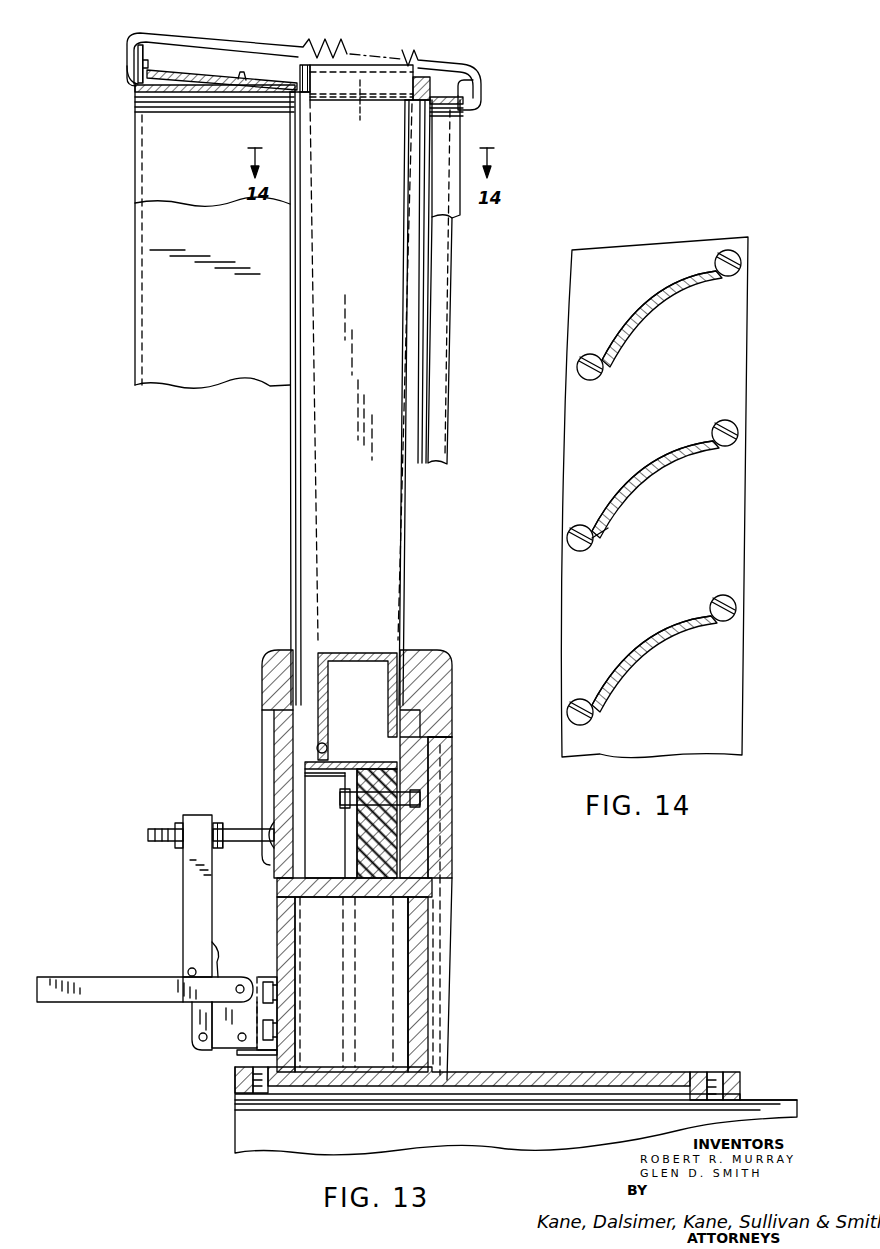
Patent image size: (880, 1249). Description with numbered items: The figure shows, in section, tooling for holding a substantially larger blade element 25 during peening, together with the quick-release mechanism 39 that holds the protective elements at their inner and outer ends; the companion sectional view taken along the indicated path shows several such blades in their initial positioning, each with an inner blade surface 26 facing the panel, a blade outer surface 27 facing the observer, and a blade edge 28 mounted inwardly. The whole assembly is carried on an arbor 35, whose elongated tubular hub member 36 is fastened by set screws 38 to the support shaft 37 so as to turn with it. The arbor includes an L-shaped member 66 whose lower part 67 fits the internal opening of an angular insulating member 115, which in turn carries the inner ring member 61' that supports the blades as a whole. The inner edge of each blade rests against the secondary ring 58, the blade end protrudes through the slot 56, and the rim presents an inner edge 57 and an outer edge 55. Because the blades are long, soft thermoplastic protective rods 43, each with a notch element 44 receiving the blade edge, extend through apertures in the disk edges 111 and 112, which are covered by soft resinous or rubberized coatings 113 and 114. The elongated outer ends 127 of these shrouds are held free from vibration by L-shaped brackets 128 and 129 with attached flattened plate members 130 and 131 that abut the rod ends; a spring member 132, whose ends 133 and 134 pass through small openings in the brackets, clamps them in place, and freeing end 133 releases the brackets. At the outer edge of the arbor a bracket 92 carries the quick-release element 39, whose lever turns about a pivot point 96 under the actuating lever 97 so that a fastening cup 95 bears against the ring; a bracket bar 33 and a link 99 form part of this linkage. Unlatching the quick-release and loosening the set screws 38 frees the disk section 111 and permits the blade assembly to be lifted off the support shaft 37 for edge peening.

In FIG. 13, the blade element 25 is at (390, 356).
In FIG. 14, the blade element 25 is at (713, 489).
In FIG. 14, the inner blade surface 26 is at (624, 342).
In FIG. 14, the blade outer surface 27 is at (658, 312).
In FIG. 14, the blade edge 28 is at (596, 540).
In FIG. 13, the bracket bar 33 is at (185, 885).
In FIG. 13, the arbor 35 is at (420, 992).
In FIG. 13, the tubular hub member 36 is at (518, 1072).
In FIG. 13, the support shaft 37 is at (572, 1140).
In FIG. 13, the set screws 38 is at (236, 1080).
In FIG. 13, the quick-release mechanism 39 is at (188, 928).
In FIG. 13, the protective rod 43 is at (300, 572).
In FIG. 14, the protective rod 43 is at (572, 372).
In FIG. 14, the notch element 44 is at (712, 266).
In FIG. 13, the outer edge 55 is at (200, 74).
In FIG. 13, the slot 56 is at (360, 92).
In FIG. 13, the inner edge 57 is at (430, 82).
In FIG. 13, the secondary ring 58 is at (346, 653).
In FIG. 13, the inner ring member 61' is at (351, 801).
In FIG. 13, the L-shaped member 66 is at (435, 895).
In FIG. 13, the lower part of L-shaped member 67 is at (330, 900).
In FIG. 13, the bracket 92 is at (222, 1050).
In FIG. 13, the fastening cup 95 is at (270, 828).
In FIG. 13, the pivot point 96 is at (198, 1037).
In FIG. 13, the actuating lever 97 is at (108, 982).
In FIG. 13, the link 99 is at (243, 980).
In FIG. 13, the disk edge 111 is at (275, 665).
In FIG. 13, the disk edge 112 is at (440, 690).
In FIG. 13, the soft resinous or rubberized coating 113 is at (266, 688).
In FIG. 13, the soft resinous or rubberized coating 114 is at (452, 710).
In FIG. 13, the insulating member 115 is at (388, 848).
In FIG. 13, the outer ends of protective shrouds 127 is at (310, 98).
In FIG. 13, the L-shaped bracket 128 is at (466, 98).
In FIG. 13, the L-shaped bracket 129 is at (127, 64).
In FIG. 13, the flattened plate member 130 is at (466, 107).
In FIG. 13, the flattened plate member 131 is at (170, 92).
In FIG. 13, the spring member 132 is at (312, 44).
In FIG. 13, the spring end 133 is at (143, 58).
In FIG. 13, the spring end 134 is at (476, 78).